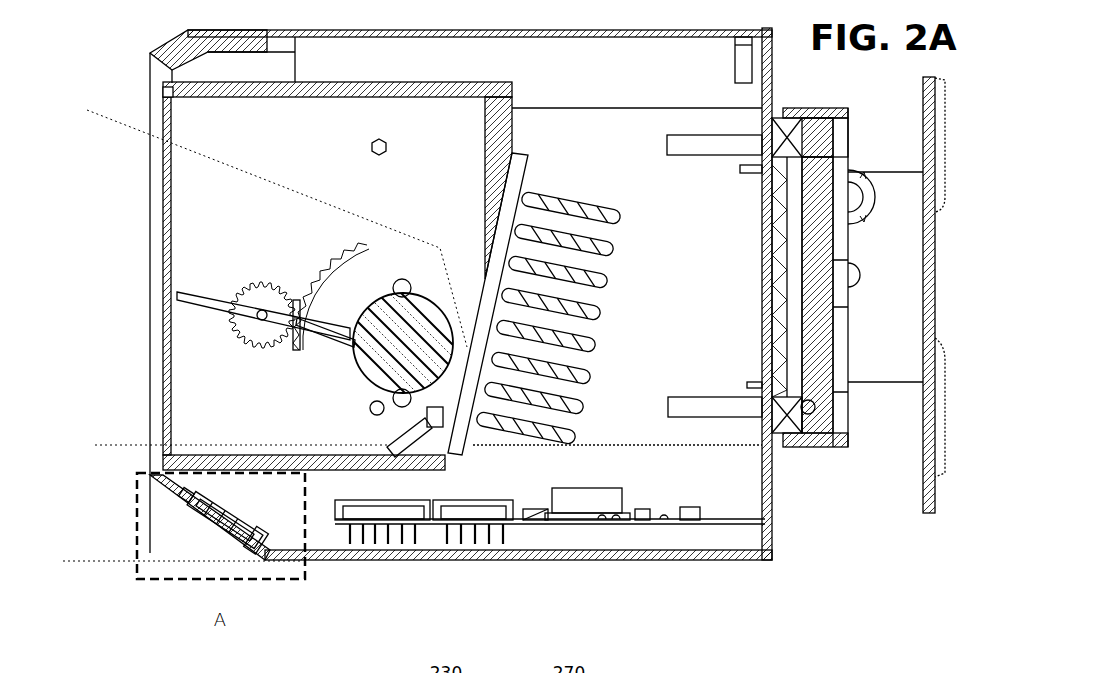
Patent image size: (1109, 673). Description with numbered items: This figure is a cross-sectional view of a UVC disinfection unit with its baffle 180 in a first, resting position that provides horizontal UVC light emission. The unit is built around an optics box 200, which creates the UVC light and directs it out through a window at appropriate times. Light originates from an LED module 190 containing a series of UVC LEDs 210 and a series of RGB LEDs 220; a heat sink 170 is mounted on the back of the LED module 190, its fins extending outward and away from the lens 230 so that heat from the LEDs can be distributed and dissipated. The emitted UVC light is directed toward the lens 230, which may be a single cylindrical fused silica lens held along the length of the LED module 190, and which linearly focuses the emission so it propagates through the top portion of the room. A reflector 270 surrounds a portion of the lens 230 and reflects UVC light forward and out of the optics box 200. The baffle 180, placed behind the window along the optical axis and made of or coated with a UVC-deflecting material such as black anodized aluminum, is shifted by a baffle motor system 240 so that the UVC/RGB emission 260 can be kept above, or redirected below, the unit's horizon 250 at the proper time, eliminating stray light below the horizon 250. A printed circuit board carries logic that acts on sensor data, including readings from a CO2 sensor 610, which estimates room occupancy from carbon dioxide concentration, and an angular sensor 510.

The optics box 200 is at (230, 128).
The baffle 180 is at (181, 292).
The baffle motor system 240 is at (258, 348).
The lens 230 is at (386, 298).
The reflector 270 is at (443, 293).
The heat sink 170 is at (558, 200).
The UVC LEDs 210 is at (600, 316).
The RGB LEDs 220 is at (600, 347).
The LED module 190 is at (465, 352).
The UVC/RGB emission 260 is at (120, 447).
The horizon 250 is at (86, 566).
The CO2 sensor 610 is at (233, 532).
The angular sensor 510 is at (444, 528).